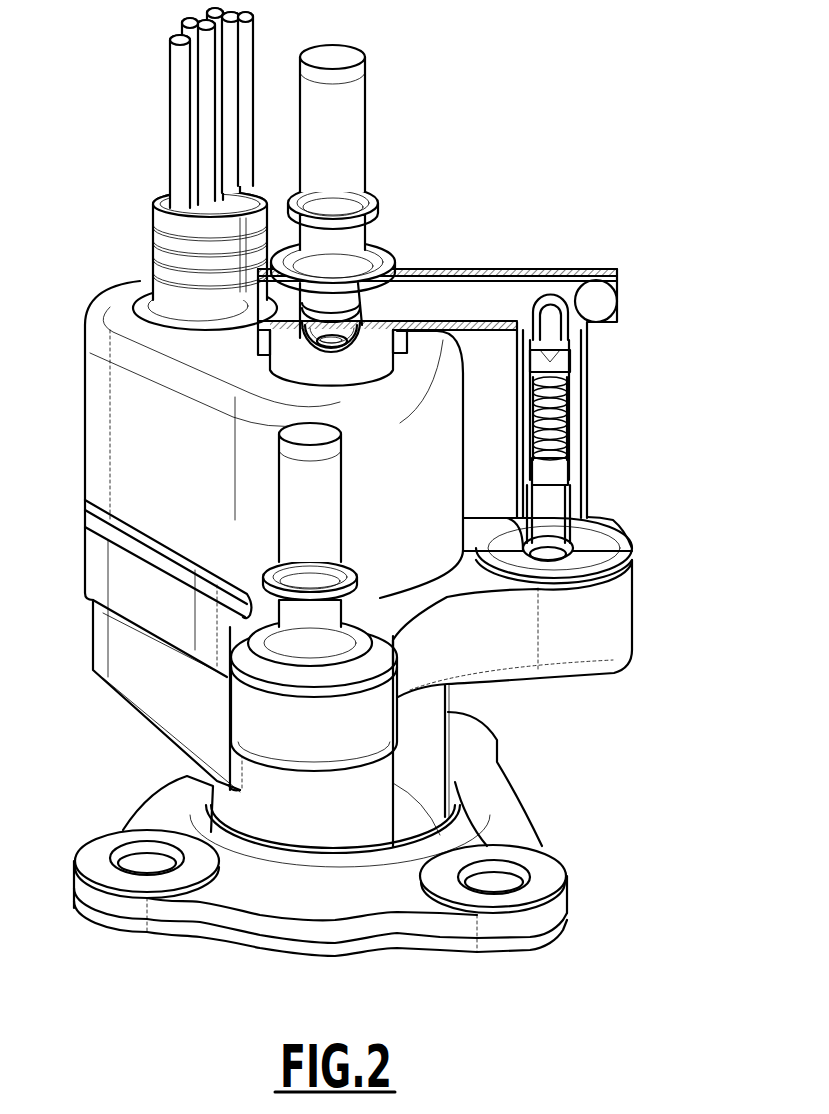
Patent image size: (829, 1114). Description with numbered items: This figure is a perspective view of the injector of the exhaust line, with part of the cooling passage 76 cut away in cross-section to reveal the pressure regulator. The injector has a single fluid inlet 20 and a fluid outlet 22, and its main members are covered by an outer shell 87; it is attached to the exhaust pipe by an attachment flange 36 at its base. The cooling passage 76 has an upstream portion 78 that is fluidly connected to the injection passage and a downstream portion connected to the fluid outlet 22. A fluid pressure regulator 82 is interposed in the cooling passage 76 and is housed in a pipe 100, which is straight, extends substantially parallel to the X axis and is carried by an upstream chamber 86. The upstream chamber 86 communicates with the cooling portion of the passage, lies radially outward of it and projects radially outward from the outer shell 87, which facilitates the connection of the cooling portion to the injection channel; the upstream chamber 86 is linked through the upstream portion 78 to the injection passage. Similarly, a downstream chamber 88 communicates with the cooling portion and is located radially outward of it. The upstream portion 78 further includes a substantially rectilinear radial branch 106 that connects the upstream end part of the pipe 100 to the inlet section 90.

The fluid inlet 20 is at (338, 101).
The fluid outlet 22 is at (297, 478).
The attachment flange 36 is at (503, 815).
The cooling passage 76 is at (619, 236).
The upstream portion 78 is at (500, 268).
The fluid pressure regulator 82 is at (565, 414).
The upstream chamber 86 is at (607, 613).
The outer shell 87 is at (98, 489).
The downstream chamber 88 is at (262, 714).
The inlet section 90 is at (153, 275).
The pipe 100 is at (573, 493).
The radial branch 106 is at (447, 280).